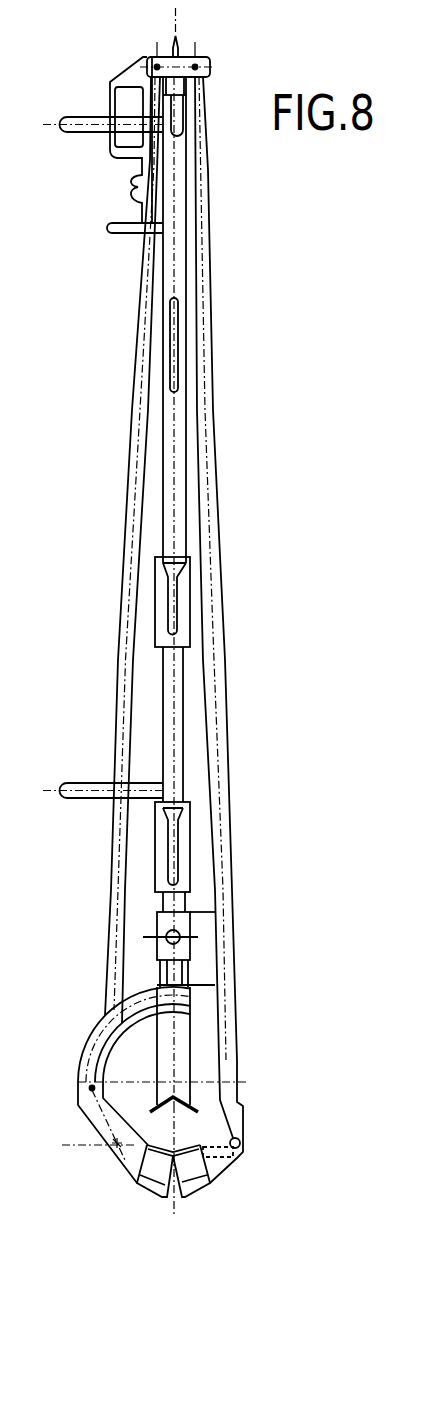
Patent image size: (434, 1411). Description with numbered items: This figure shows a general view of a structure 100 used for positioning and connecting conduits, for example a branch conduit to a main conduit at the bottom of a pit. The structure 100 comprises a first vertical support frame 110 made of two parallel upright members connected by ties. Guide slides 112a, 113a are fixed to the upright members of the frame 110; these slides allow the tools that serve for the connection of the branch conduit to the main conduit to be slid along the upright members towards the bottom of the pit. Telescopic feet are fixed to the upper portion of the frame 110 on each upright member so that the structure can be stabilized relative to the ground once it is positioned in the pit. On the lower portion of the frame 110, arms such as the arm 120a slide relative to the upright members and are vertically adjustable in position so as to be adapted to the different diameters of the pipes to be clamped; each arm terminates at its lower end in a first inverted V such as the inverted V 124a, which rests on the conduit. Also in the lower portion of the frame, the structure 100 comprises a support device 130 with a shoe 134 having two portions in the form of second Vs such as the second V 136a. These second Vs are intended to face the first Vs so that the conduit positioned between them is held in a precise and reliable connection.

The structure 100 is at (278, 647).
The first vertical support frame 110 is at (233, 468).
The guide slide 113a is at (243, 580).
The guide slide 112a is at (250, 852).
The arm 120a is at (182, 1052).
The first inverted V 124a is at (198, 1107).
The support device 130 is at (58, 1180).
The shoe 134 is at (120, 1223).
The second V 136a is at (250, 1192).